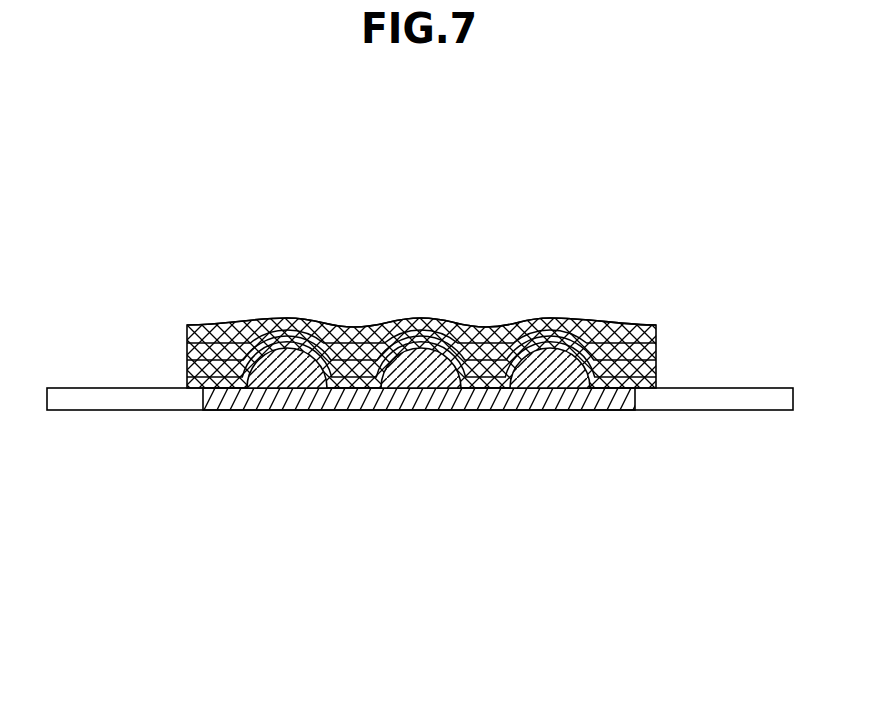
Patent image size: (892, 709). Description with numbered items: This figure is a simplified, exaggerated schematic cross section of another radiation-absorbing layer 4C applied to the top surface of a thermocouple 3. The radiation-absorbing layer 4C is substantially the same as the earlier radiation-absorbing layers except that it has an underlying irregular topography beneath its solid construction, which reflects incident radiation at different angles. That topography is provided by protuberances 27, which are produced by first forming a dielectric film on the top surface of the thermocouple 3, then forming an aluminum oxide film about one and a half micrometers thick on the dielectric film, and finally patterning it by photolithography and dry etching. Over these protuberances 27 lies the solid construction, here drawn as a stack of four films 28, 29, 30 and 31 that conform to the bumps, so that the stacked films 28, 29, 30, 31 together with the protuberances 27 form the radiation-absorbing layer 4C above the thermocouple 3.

The thermocouple 3 is at (367, 412).
The radiation-absorbing layer 4C is at (168, 358).
The protuberances 27 is at (297, 372).
The film 28 is at (656, 385).
The film 29 is at (656, 370).
The film 30 is at (656, 352).
The film 31 is at (656, 328).